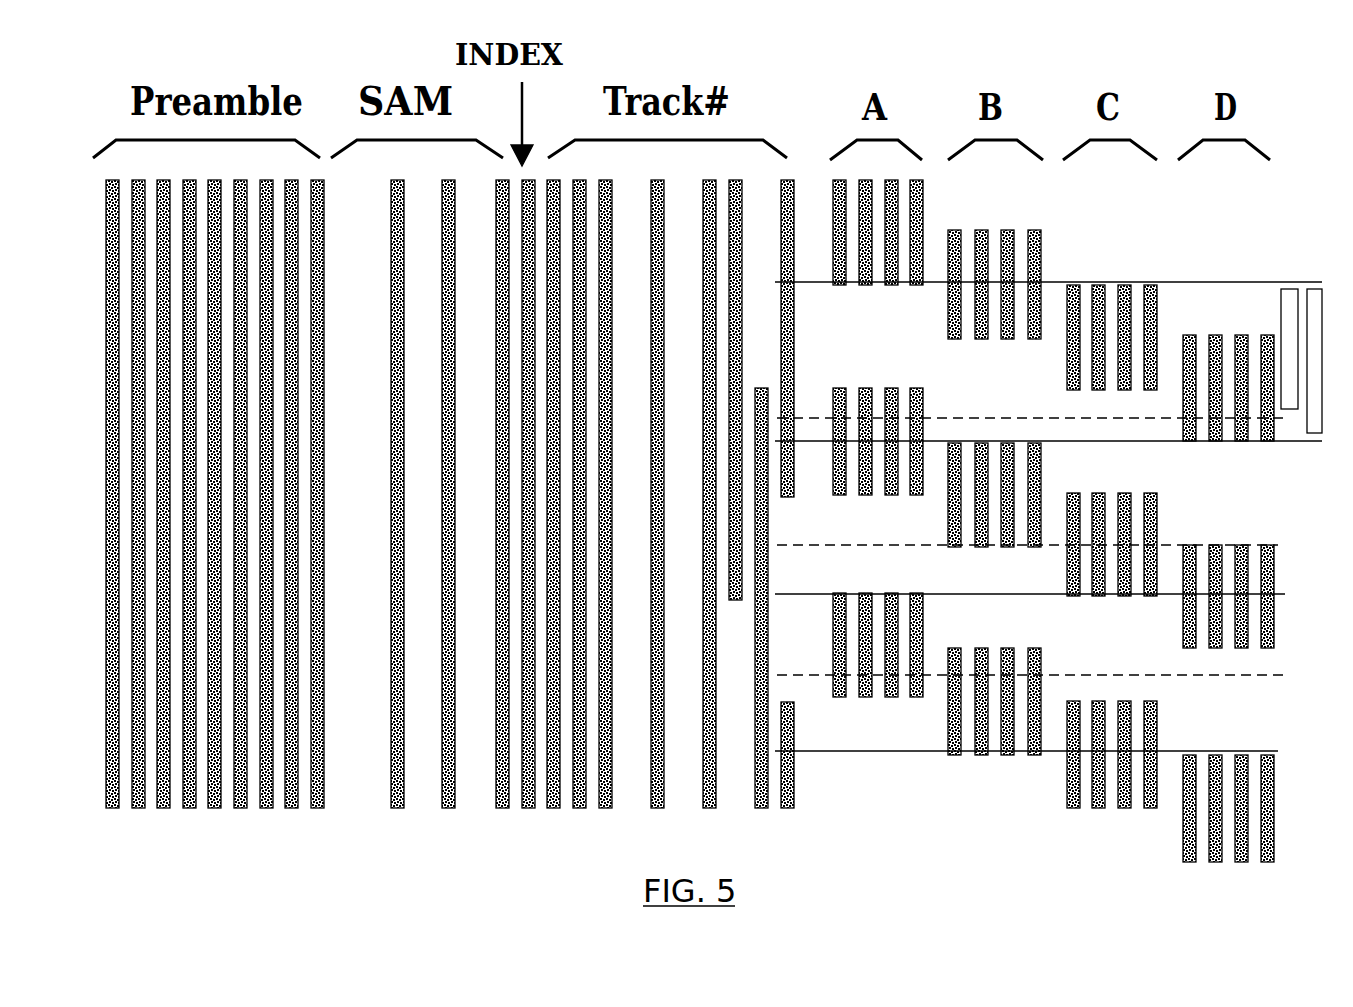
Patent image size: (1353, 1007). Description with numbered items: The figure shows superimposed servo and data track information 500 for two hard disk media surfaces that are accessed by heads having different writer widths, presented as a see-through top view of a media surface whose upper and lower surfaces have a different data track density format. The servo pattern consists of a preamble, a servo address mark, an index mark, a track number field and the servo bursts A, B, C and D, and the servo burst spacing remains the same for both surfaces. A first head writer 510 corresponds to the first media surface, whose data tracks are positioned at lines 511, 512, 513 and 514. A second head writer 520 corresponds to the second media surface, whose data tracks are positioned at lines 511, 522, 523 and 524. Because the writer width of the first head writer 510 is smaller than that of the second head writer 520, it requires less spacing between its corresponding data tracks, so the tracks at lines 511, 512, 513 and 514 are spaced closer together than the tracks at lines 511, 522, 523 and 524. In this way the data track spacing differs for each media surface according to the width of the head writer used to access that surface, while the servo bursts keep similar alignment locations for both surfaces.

The servo pattern 500 is at (1186, 34).
The head writer 510 is at (1289, 303).
The head writer 520 is at (1314, 303).
The data track line 511 is at (1240, 282).
The data track line 512 is at (1147, 418).
The data track line 513 is at (1215, 533).
The data track line 514 is at (1160, 675).
The data track line 522 is at (1255, 441).
The data track line 523 is at (1316, 583).
The data track line 524 is at (1255, 751).